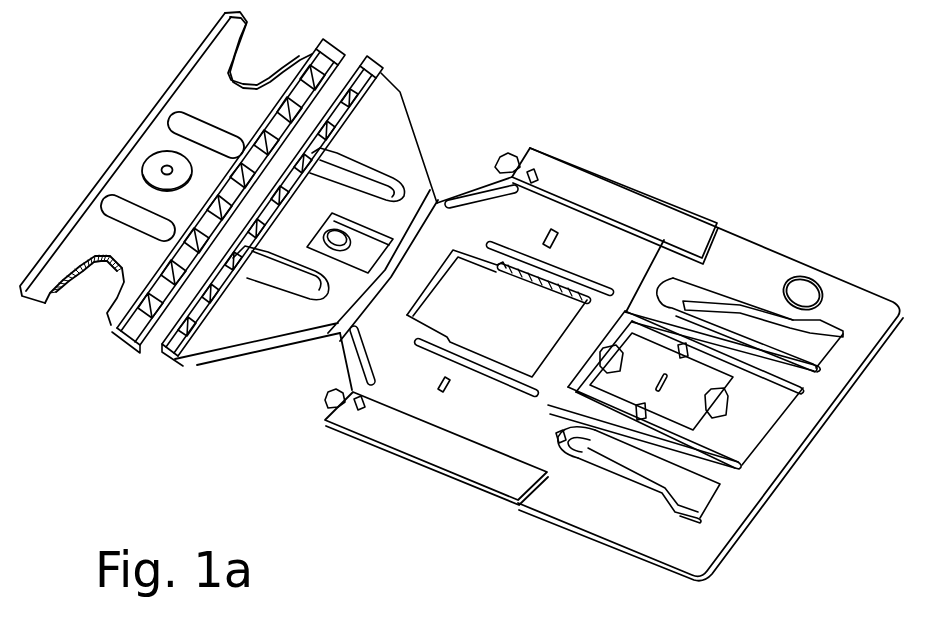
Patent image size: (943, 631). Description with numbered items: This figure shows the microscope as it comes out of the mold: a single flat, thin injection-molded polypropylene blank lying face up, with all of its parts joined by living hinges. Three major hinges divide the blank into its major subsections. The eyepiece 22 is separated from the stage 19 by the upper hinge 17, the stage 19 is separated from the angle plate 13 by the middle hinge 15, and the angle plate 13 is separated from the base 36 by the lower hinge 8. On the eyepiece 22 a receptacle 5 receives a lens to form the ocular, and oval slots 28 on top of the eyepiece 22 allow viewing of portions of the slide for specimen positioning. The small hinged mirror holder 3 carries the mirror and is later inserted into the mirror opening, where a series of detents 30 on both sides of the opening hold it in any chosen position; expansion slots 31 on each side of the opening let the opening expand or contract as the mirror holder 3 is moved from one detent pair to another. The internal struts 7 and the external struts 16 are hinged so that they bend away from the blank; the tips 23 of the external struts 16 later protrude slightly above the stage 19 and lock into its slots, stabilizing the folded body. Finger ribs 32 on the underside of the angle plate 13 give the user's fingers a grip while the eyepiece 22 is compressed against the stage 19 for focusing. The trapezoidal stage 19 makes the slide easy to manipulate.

The mirror holder 3 is at (749, 427).
The receptacle 5 is at (145, 157).
The internal struts 7 is at (740, 317).
The lower hinge 8 is at (548, 409).
The angle plate 13 is at (612, 272).
The middle hinge 15 is at (362, 293).
The external struts 16 is at (618, 205).
The upper hinge 17 is at (103, 323).
The stage 19 is at (399, 157).
The eyepiece 22 is at (227, 106).
The tips 23 is at (512, 143).
The oval slots 28 is at (190, 133).
The detents 30 is at (543, 289).
The expansion slots 31 is at (518, 245).
The finger ribs 32 is at (492, 193).
The base 36 is at (637, 517).